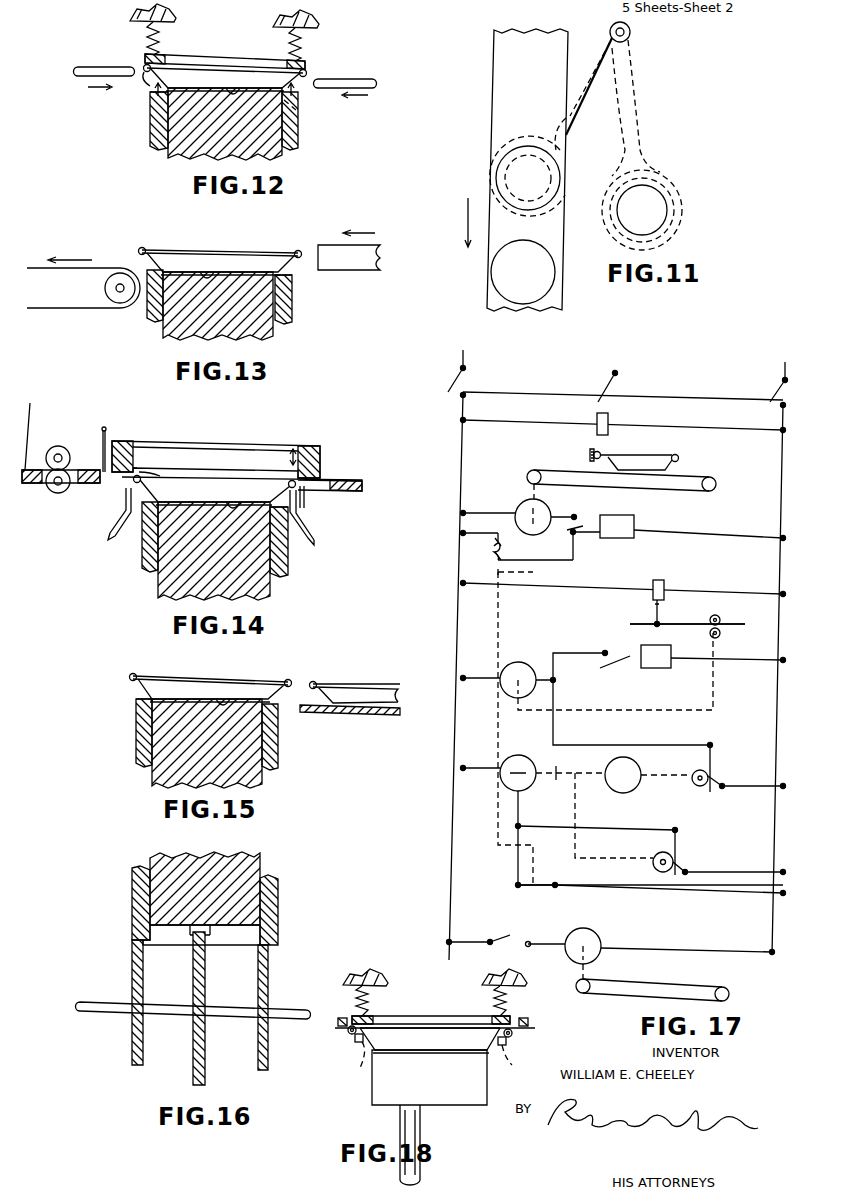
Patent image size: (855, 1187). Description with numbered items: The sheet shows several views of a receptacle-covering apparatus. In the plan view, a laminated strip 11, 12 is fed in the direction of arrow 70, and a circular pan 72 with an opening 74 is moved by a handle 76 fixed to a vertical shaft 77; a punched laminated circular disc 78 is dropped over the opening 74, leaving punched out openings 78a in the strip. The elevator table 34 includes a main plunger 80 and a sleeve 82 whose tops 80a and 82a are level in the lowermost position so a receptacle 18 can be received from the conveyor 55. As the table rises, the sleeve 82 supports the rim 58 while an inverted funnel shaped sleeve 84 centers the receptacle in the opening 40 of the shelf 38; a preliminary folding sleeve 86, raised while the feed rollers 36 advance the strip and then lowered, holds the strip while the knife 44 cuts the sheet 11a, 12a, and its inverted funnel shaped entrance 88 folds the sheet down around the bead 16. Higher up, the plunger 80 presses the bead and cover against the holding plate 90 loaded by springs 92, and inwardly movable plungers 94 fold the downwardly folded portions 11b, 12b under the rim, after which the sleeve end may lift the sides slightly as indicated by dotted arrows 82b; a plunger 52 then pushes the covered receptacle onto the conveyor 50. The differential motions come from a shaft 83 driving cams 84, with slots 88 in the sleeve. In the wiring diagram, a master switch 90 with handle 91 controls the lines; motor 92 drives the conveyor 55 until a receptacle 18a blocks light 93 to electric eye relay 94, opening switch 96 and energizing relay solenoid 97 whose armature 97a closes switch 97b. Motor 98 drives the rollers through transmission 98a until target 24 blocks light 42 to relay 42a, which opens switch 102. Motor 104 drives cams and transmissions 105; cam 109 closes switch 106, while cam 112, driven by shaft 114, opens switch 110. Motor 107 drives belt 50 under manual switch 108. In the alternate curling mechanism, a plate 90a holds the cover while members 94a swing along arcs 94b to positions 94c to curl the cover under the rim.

In FIG. 14, the laminated strip 11 is at (61, 436).
In FIG. 11, the laminated strip 11 is at (502, 170).
In FIG. 17, the laminated strip 11 is at (670, 610).
In FIG. 14, the laminated strip 12 is at (61, 436).
In FIG. 11, the laminated strip 12 is at (500, 50).
In FIG. 17, the laminated strip 12 is at (640, 620).
In FIG. 12, the sheet 11a is at (189, 56).
In FIG. 13, the sheet 11a is at (179, 230).
In FIG. 14, the sheet 11a is at (215, 443).
In FIG. 18, the sheet 11a is at (431, 994).
In FIG. 12, the sheet 12a is at (300, 60).
In FIG. 13, the sheet 12a is at (168, 252).
In FIG. 14, the sheet 12a is at (188, 478).
In FIG. 18, the sheet 12a is at (410, 1016).
In FIG. 13, the downwardly folded portion of the cover 11b is at (191, 243).
In FIG. 13, the downwardly folded portion of the cover 12b is at (140, 253).
In FIG. 12, the bead 16 is at (306, 66).
In FIG. 13, the bead 16 is at (297, 250).
In FIG. 12, the receptacle 18 is at (163, 80).
In FIG. 13, the receptacle 18 is at (235, 260).
In FIG. 14, the receptacle 18 is at (168, 490).
In FIG. 15, the receptacle 18 is at (160, 680).
In FIG. 18, the receptacle 18 is at (470, 1035).
In FIG. 15, the receptacle 18a is at (335, 695).
In FIG. 17, the receptacle 18a is at (660, 460).
In FIG. 17, the target 24 is at (662, 622).
In FIG. 12, the elevator table 34 is at (328, 153).
In FIG. 13, the elevator table 34 is at (328, 335).
In FIG. 14, the elevator table 34 is at (315, 582).
In FIG. 15, the elevator table 34 is at (313, 766).
In FIG. 14, the feed rollers 36 is at (66, 448).
In FIG. 17, the feed rollers 36 is at (720, 618).
In FIG. 14, the shelf 38 is at (360, 492).
In FIG. 14, the opening 40 is at (306, 504).
In FIG. 17, the light 42 is at (665, 586).
In FIG. 17, the electric eye relay 42a is at (650, 645).
In FIG. 14, the knife 44 is at (100, 430).
In FIG. 13, the conveyor 50 is at (70, 305).
In FIG. 17, the conveyor 50 is at (680, 980).
In FIG. 13, the plunger 52 is at (374, 260).
In FIG. 15, the conveyor 55 is at (333, 716).
In FIG. 17, the conveyor 55 is at (698, 492).
In FIG. 12, the rim 58 is at (147, 74).
In FIG. 11, the arrow 70 is at (468, 215).
In FIG. 11, the circular pan 72 is at (503, 150).
In FIG. 11, the opening 74 is at (510, 178).
In FIG. 11, the handle 76 is at (587, 70).
In FIG. 11, the vertical shaft 77 is at (628, 33).
In FIG. 11, the laminated circular disc 78 is at (560, 180).
In FIG. 11, the punched out opening 78a is at (555, 292).
In FIG. 12, the main plunger 80 is at (195, 152).
In FIG. 13, the main plunger 80 is at (272, 330).
In FIG. 14, the main plunger 80 is at (162, 588).
In FIG. 15, the main plunger 80 is at (160, 778).
In FIG. 16, the main plunger 80 is at (255, 858).
In FIG. 18, the main plunger 80 is at (492, 1110).
In FIG. 12, the top of plunger 80a is at (233, 93).
In FIG. 13, the top of plunger 80a is at (208, 275).
In FIG. 14, the top of plunger 80a is at (233, 505).
In FIG. 15, the top of plunger 80a is at (226, 702).
In FIG. 12, the sleeve 82 is at (150, 135).
In FIG. 13, the sleeve 82 is at (292, 305).
In FIG. 14, the sleeve 82 is at (142, 560).
In FIG. 15, the sleeve 82 is at (136, 740).
In FIG. 16, the sleeve 82 is at (132, 893).
In FIG. 12, the top of sleeve 82a is at (160, 93).
In FIG. 13, the top of sleeve 82a is at (293, 276).
In FIG. 14, the top of sleeve 82a is at (292, 510).
In FIG. 15, the top of sleeve 82a is at (148, 700).
In FIG. 12, the dotted arrows 82b is at (300, 108).
In FIG. 16, the shaft 83 is at (88, 1002).
In FIG. 14, the cams 84 is at (312, 540).
In FIG. 16, the cams 84 is at (132, 1050).
In FIG. 14, the preliminary folding sleeve 86 is at (322, 458).
In FIG. 14, the inverted funnel shaped entrance 88 is at (140, 470).
In FIG. 16, the inverted funnel shaped entrance 88 is at (210, 937).
In FIG. 12, the holding plate 90 is at (305, 70).
In FIG. 17, the holding plate 90 is at (775, 398).
In FIG. 18, the plate 90a is at (510, 1016).
In FIG. 17, the handle 91 is at (604, 380).
In FIG. 12, the springs 92 is at (148, 33).
In FIG. 17, the springs 92 is at (520, 505).
In FIG. 18, the springs 92 is at (360, 988).
In FIG. 17, the light 93 is at (610, 418).
In FIG. 12, the inwardly movable plungers 94 is at (88, 70).
In FIG. 17, the inwardly movable plungers 94 is at (634, 530).
In FIG. 18, the members 94a is at (372, 1018).
In FIG. 18, the arcs 94b is at (350, 1034).
In FIG. 18, the dotted positions 94c is at (437, 1055).
In FIG. 17, the switch 96 is at (586, 530).
In FIG. 17, the relay solenoid 97 is at (494, 548).
In FIG. 17, the armature 97a is at (533, 723).
In FIG. 17, the switch 97b is at (542, 888).
In FIG. 17, the motor 98 is at (538, 650).
In FIG. 17, the transmission 98a is at (638, 712).
In FIG. 17, the switch 102 is at (620, 670).
In FIG. 17, the motor 104 is at (530, 758).
In FIG. 17, the cams and transmissions 105 is at (632, 790).
In FIG. 17, the switch 106 is at (713, 768).
In FIG. 17, the motor 107 is at (598, 936).
In FIG. 17, the manual switch 108 is at (508, 935).
In FIG. 17, the cam 109 is at (694, 772).
In FIG. 17, the switch 110 is at (678, 845).
In FIG. 17, the cam 112 is at (653, 866).
In FIG. 17, the transmission or shaft 114 is at (556, 768).